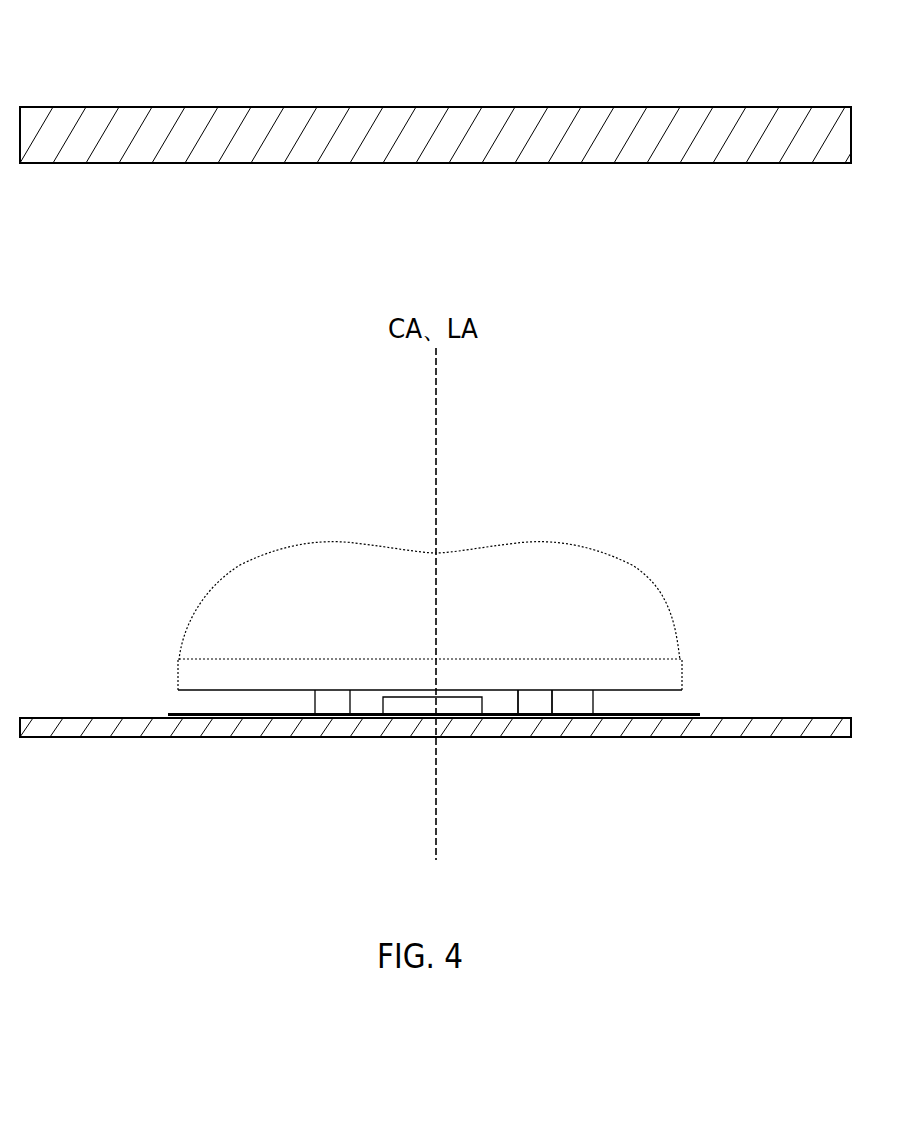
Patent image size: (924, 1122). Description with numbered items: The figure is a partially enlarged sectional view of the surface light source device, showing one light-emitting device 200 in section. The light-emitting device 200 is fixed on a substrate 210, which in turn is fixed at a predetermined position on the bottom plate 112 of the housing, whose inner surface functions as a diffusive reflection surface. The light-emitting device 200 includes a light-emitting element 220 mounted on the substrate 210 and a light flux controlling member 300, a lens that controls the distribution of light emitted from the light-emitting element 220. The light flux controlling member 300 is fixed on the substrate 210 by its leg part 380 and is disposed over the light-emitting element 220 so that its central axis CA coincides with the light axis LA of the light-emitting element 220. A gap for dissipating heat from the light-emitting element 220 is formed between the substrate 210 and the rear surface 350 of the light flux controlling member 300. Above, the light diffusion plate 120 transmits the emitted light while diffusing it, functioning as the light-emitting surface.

The bottom plate 112 is at (117, 717).
The light diffusion plate 120 is at (148, 106).
The light-emitting device 200 is at (410, 638).
The substrate 210 is at (178, 713).
The light-emitting element 220 is at (397, 705).
The light flux controlling member 300 is at (325, 582).
The rear surface 350 is at (592, 712).
The leg part 380 is at (533, 702).